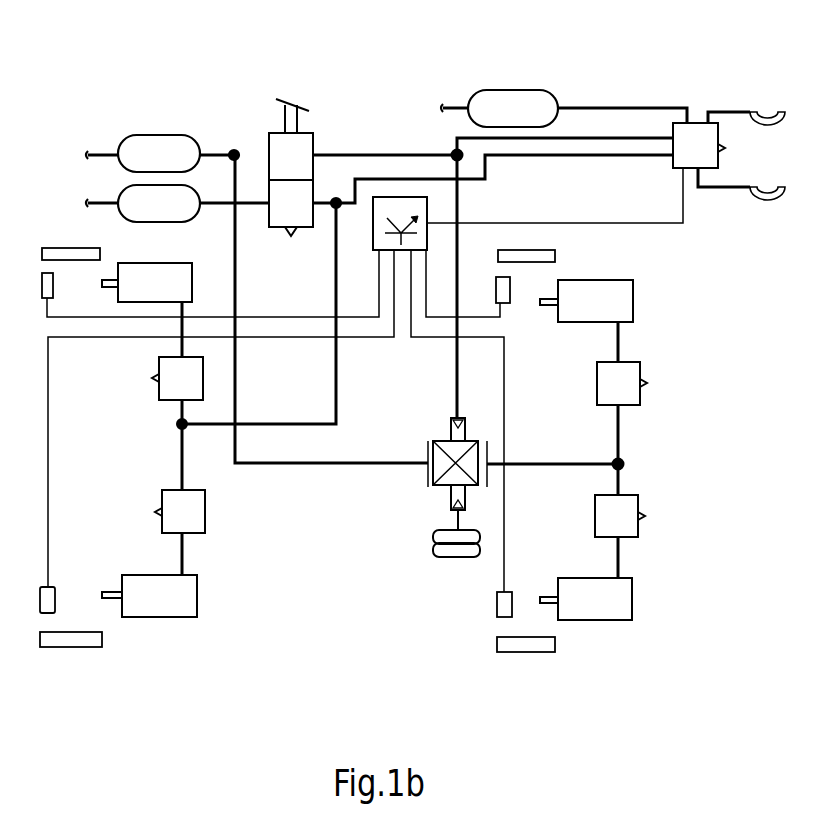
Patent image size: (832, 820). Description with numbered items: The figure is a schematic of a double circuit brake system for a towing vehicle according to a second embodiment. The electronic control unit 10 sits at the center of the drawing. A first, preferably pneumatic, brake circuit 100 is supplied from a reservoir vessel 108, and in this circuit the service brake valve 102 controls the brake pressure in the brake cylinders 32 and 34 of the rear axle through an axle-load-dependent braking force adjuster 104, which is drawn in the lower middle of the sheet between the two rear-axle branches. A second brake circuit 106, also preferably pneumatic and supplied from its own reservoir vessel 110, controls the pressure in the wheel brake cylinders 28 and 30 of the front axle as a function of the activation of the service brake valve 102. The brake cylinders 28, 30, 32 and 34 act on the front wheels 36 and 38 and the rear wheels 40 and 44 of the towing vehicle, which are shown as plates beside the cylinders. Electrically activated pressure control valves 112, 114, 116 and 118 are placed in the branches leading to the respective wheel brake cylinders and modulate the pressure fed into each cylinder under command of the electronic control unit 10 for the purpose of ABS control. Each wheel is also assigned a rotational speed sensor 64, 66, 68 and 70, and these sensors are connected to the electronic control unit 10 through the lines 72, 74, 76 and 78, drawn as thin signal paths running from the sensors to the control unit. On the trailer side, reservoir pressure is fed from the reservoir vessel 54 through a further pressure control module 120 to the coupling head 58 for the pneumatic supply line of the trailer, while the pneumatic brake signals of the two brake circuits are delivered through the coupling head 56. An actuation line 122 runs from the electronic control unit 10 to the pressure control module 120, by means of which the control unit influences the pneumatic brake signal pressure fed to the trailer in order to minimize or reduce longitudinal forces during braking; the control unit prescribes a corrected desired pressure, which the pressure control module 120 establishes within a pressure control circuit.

The electronic control unit 10 is at (427, 238).
The wheel brake cylinder 28 is at (192, 282).
The wheel brake cylinder 30 is at (197, 617).
The brake cylinder 32 is at (633, 293).
The brake cylinder 34 is at (632, 600).
The front wheel 36 is at (57, 246).
The front wheel 38 is at (102, 647).
The rear wheel 40 is at (556, 256).
The rear wheel 44 is at (553, 652).
The reservoir vessel 54 is at (511, 90).
The coupling head 56 is at (773, 203).
The coupling head 58 is at (768, 108).
The rotational speed sensor 64 is at (36, 290).
The rotational speed sensor 66 is at (40, 600).
The rotational speed sensor 68 is at (497, 617).
The rotational speed sensor 70 is at (506, 305).
The line 72 is at (60, 317).
The line 74 is at (48, 444).
The line 76 is at (506, 405).
The line 78 is at (432, 312).
The first brake circuit 100 is at (360, 153).
The service brake valve 102 is at (296, 98).
The axle-load-dependent braking force adjuster 104 is at (437, 502).
The second brake circuit 106 is at (336, 290).
The reservoir vessel 108 is at (158, 134).
The reservoir vessel 110 is at (162, 222).
The pressure control valve 112 is at (158, 393).
The pressure control valve 114 is at (205, 533).
The pressure control valve 116 is at (641, 368).
The pressure control valve 118 is at (639, 500).
The pressure control module 120 is at (720, 164).
The actuation line 122 is at (560, 223).